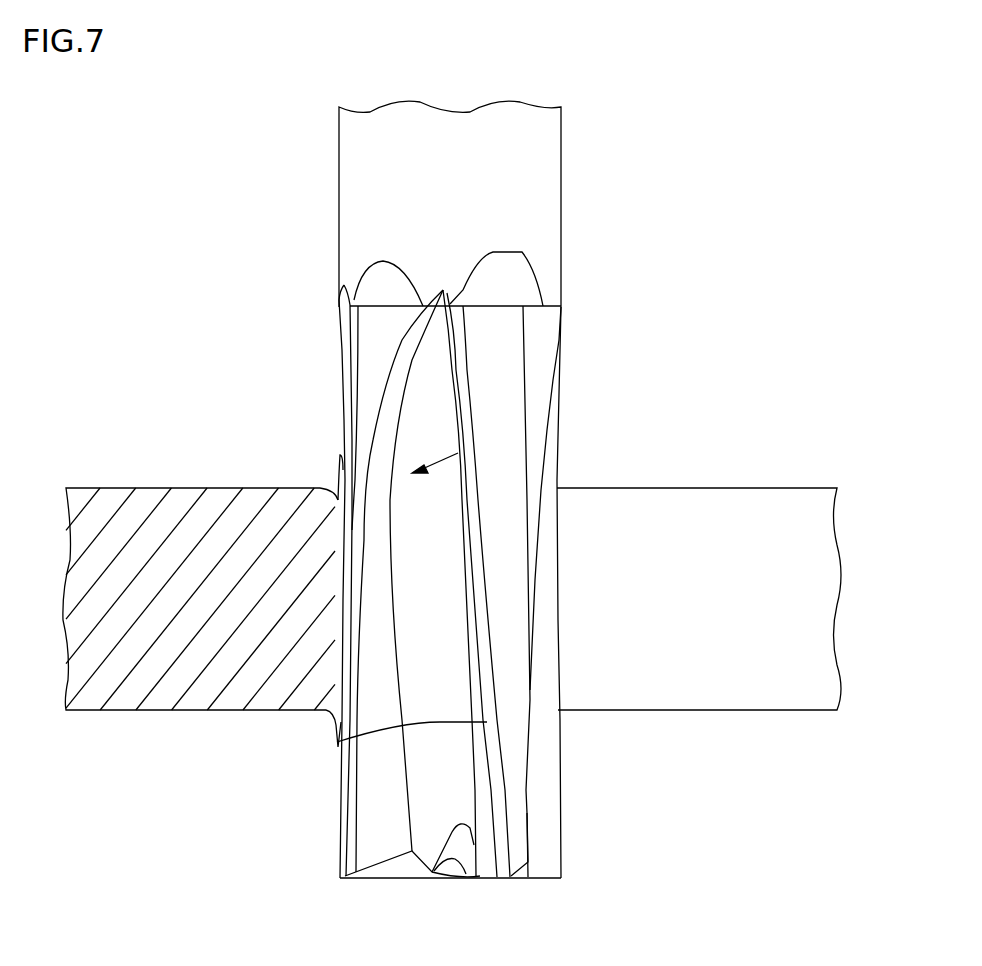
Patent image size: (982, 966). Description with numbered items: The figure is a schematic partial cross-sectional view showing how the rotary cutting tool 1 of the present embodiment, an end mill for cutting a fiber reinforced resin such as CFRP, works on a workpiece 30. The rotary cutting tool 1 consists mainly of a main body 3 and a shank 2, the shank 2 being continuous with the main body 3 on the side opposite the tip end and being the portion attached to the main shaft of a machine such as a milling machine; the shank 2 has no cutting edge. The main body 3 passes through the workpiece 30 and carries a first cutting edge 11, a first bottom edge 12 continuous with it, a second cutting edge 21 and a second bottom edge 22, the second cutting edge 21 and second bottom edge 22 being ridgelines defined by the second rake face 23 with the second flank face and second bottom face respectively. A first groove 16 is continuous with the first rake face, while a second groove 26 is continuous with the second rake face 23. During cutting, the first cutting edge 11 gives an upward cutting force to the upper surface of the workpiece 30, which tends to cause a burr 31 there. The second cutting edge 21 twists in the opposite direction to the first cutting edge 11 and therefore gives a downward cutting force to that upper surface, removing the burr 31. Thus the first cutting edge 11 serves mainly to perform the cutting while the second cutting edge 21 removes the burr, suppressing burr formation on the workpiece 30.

The rotary cutting tool 1 is at (586, 129).
The shank 2 is at (530, 170).
The main body 3 is at (498, 412).
The first cutting edge 11 is at (343, 441).
The first bottom edge 12 is at (548, 879).
The first groove 16 is at (546, 737).
The second cutting edge 21 is at (357, 739).
The second bottom edge 22 is at (487, 879).
The second rake face 23 is at (483, 802).
The second groove 26 is at (443, 765).
The workpiece 30 is at (712, 548).
The burr 31 is at (341, 474).